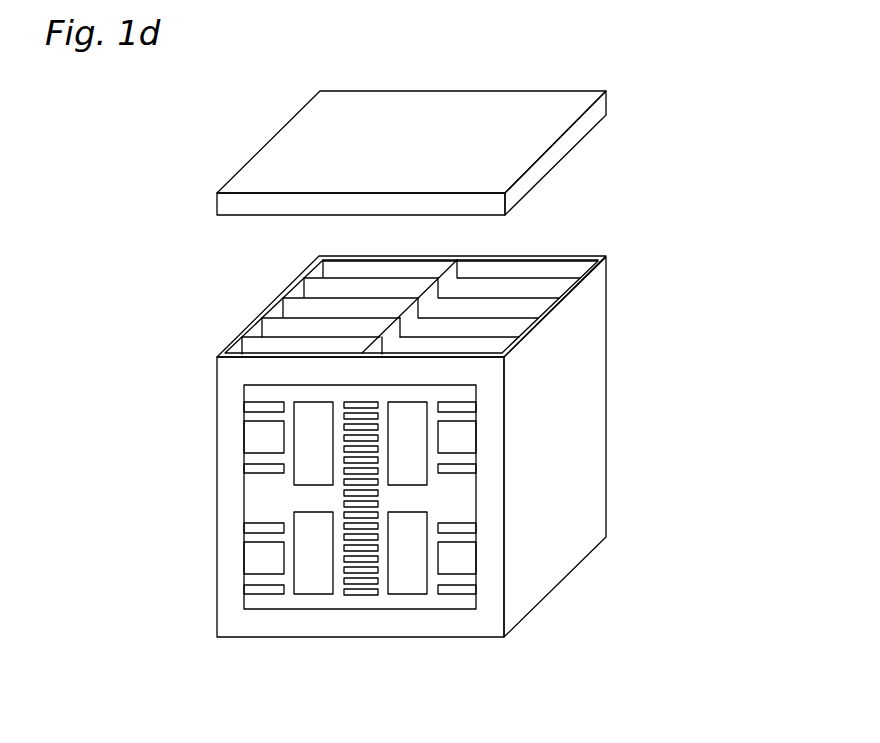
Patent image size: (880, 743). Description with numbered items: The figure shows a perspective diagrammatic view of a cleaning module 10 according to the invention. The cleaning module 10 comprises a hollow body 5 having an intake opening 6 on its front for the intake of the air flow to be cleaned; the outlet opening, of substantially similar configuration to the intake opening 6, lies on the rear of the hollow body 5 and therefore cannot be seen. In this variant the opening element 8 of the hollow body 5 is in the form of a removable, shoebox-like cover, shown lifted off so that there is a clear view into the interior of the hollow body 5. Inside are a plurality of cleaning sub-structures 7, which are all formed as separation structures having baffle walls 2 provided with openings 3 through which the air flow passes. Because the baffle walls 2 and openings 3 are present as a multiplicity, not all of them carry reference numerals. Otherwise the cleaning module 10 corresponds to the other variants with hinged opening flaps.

The baffle wall 2 is at (338, 596).
The opening 3 is at (415, 595).
The hollow body 5 is at (578, 449).
The intake opening 6 is at (267, 609).
The cleaning sub-structure 7 is at (555, 273).
The opening element 8 is at (513, 120).
The cleaning module 10 is at (668, 305).